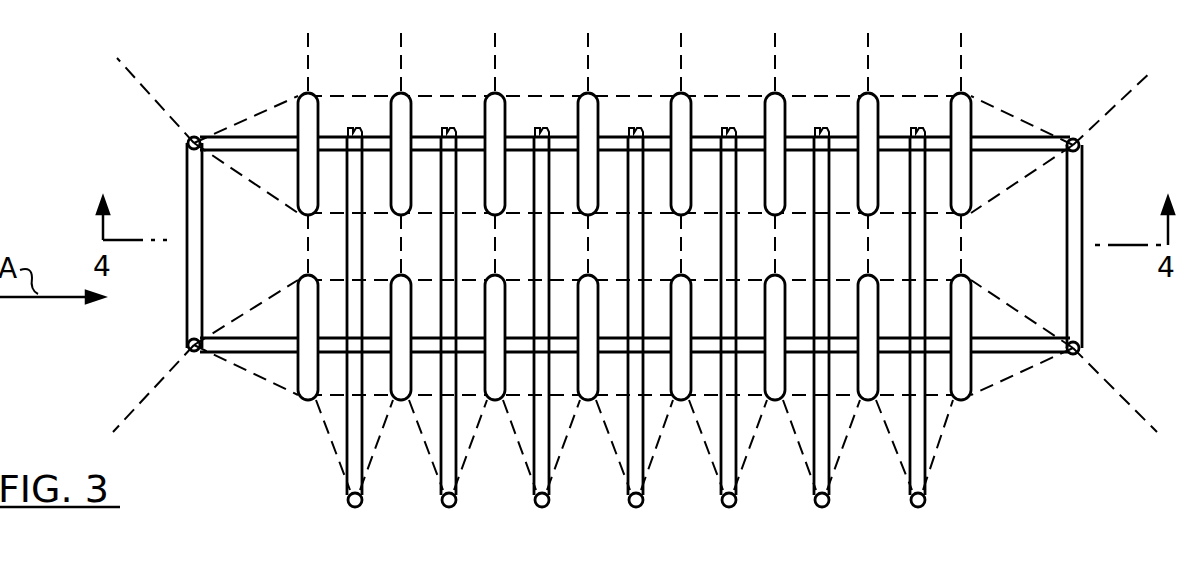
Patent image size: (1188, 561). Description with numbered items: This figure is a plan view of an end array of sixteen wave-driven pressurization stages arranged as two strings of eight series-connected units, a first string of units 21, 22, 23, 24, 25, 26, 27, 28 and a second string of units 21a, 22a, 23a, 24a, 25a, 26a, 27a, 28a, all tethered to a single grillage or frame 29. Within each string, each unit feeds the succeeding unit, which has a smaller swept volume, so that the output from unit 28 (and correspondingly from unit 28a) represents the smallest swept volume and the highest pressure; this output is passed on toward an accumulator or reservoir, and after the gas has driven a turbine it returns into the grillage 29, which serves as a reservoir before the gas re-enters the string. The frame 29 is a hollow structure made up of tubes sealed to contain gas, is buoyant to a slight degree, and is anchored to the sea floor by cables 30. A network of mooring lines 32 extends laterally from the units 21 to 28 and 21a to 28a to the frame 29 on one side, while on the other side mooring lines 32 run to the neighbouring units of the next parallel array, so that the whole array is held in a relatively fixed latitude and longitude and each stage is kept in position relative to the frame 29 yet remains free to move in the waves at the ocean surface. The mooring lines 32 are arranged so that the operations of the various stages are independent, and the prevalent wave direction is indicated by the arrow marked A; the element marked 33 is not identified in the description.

The pressurization unit 21a is at (300, 93).
The pressurization unit 22a is at (393, 93).
The pressurization unit 23a is at (487, 93).
The pressurization unit 24a is at (580, 93).
The pressurization unit 25a is at (673, 93).
The pressurization unit 26a is at (767, 93).
The pressurization unit 27a is at (860, 93).
The pressurization unit 28a is at (953, 93).
The pressurization unit 21 is at (311, 275).
The pressurization unit 22 is at (400, 275).
The pressurization unit 23 is at (492, 275).
The pressurization unit 24 is at (585, 275).
The pressurization unit 25 is at (678, 275).
The pressurization unit 26 is at (772, 275).
The pressurization unit 27 is at (865, 275).
The pressurization unit 28 is at (960, 275).
The grillage or frame 29 is at (185, 283).
The anchoring cables 30 is at (145, 87).
The mooring lines 32 is at (265, 297).
The center line 33 is at (536, 555).